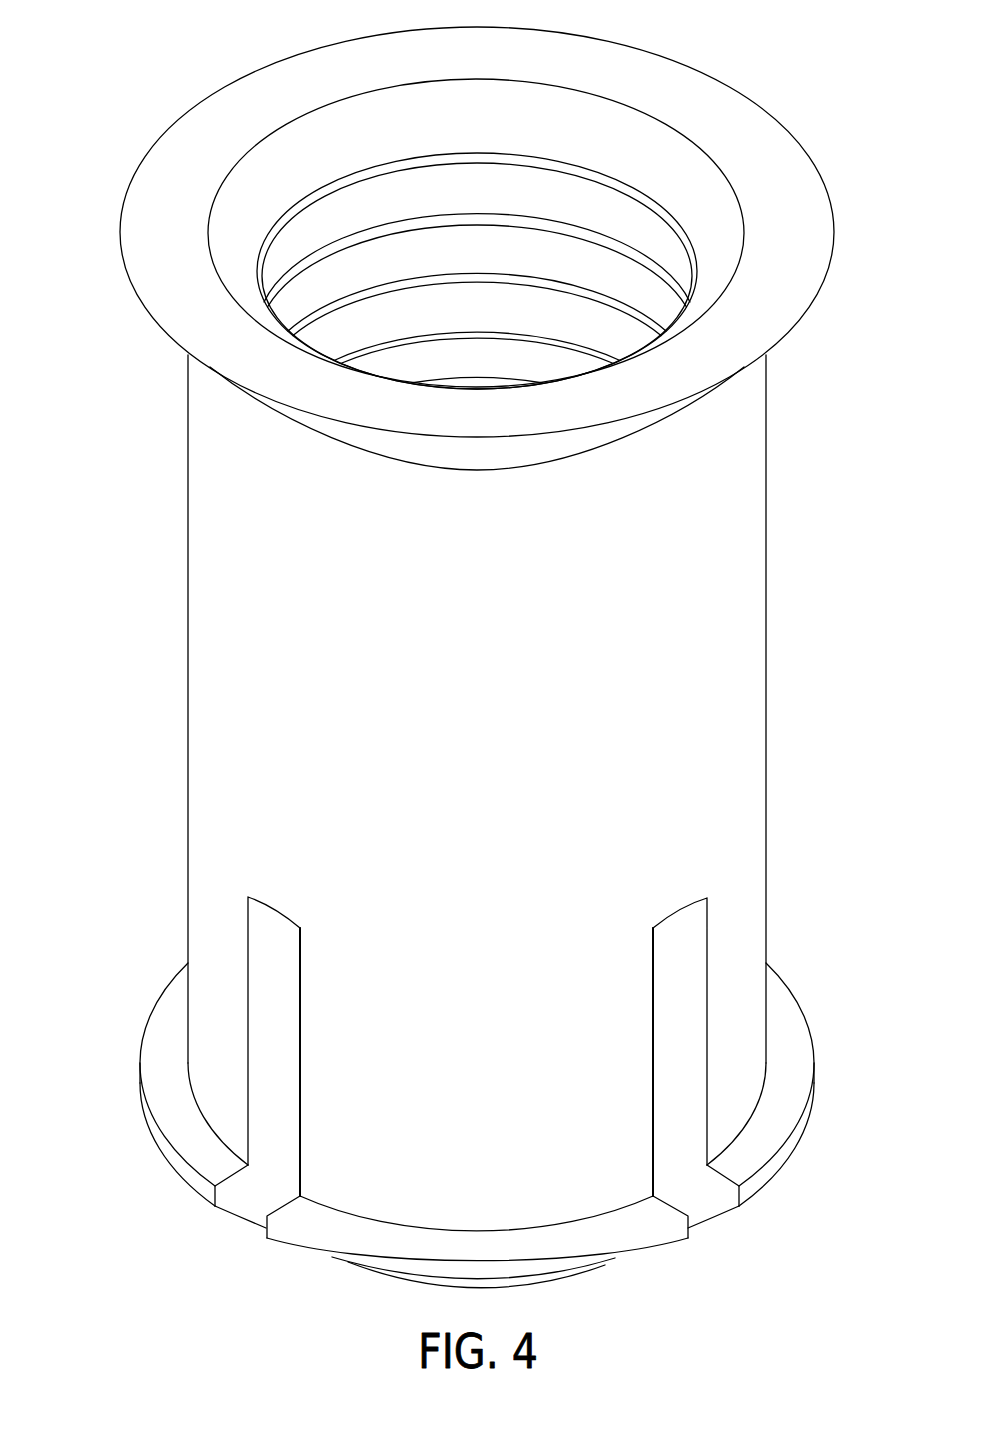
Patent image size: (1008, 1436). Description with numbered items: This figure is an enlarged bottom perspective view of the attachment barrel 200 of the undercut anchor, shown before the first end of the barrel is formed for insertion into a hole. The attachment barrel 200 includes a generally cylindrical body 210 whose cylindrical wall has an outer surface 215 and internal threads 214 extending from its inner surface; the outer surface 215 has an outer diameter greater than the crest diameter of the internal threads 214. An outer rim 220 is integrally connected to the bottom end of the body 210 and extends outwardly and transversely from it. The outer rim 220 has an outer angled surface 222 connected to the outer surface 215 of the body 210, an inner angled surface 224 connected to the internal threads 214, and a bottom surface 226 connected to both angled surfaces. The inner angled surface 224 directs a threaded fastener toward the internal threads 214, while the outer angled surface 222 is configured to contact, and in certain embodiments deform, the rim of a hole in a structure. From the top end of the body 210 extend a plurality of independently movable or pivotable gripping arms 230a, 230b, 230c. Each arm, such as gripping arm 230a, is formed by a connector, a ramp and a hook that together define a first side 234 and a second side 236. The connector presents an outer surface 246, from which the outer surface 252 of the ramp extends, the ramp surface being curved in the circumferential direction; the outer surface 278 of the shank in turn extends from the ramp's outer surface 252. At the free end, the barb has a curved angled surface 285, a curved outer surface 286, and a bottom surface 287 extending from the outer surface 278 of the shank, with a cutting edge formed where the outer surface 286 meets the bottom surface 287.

The attachment barrel 200 is at (227, 33).
The body 210 is at (154, 592).
The internal threads 214 is at (385, 260).
The outer surface 215 is at (725, 570).
The outer rim 220 is at (727, 65).
The outer angled surface 222 is at (510, 448).
The inner angled surface 224 is at (235, 222).
The bottom surface 226 is at (165, 243).
The pivotable gripping arm 230a is at (751, 1006).
The pivotable gripping arm 230b is at (568, 1152).
The pivotable gripping arm 230c is at (202, 1006).
The first side 234 is at (655, 1162).
The second side 236 is at (297, 1168).
The outer surface 246 is at (457, 957).
The outer surface 252 is at (455, 1032).
The outer surface 278 is at (455, 1100).
The angled surface 285 is at (535, 1280).
The outer surface 286 is at (348, 1253).
The bottom surface 287 is at (462, 1246).